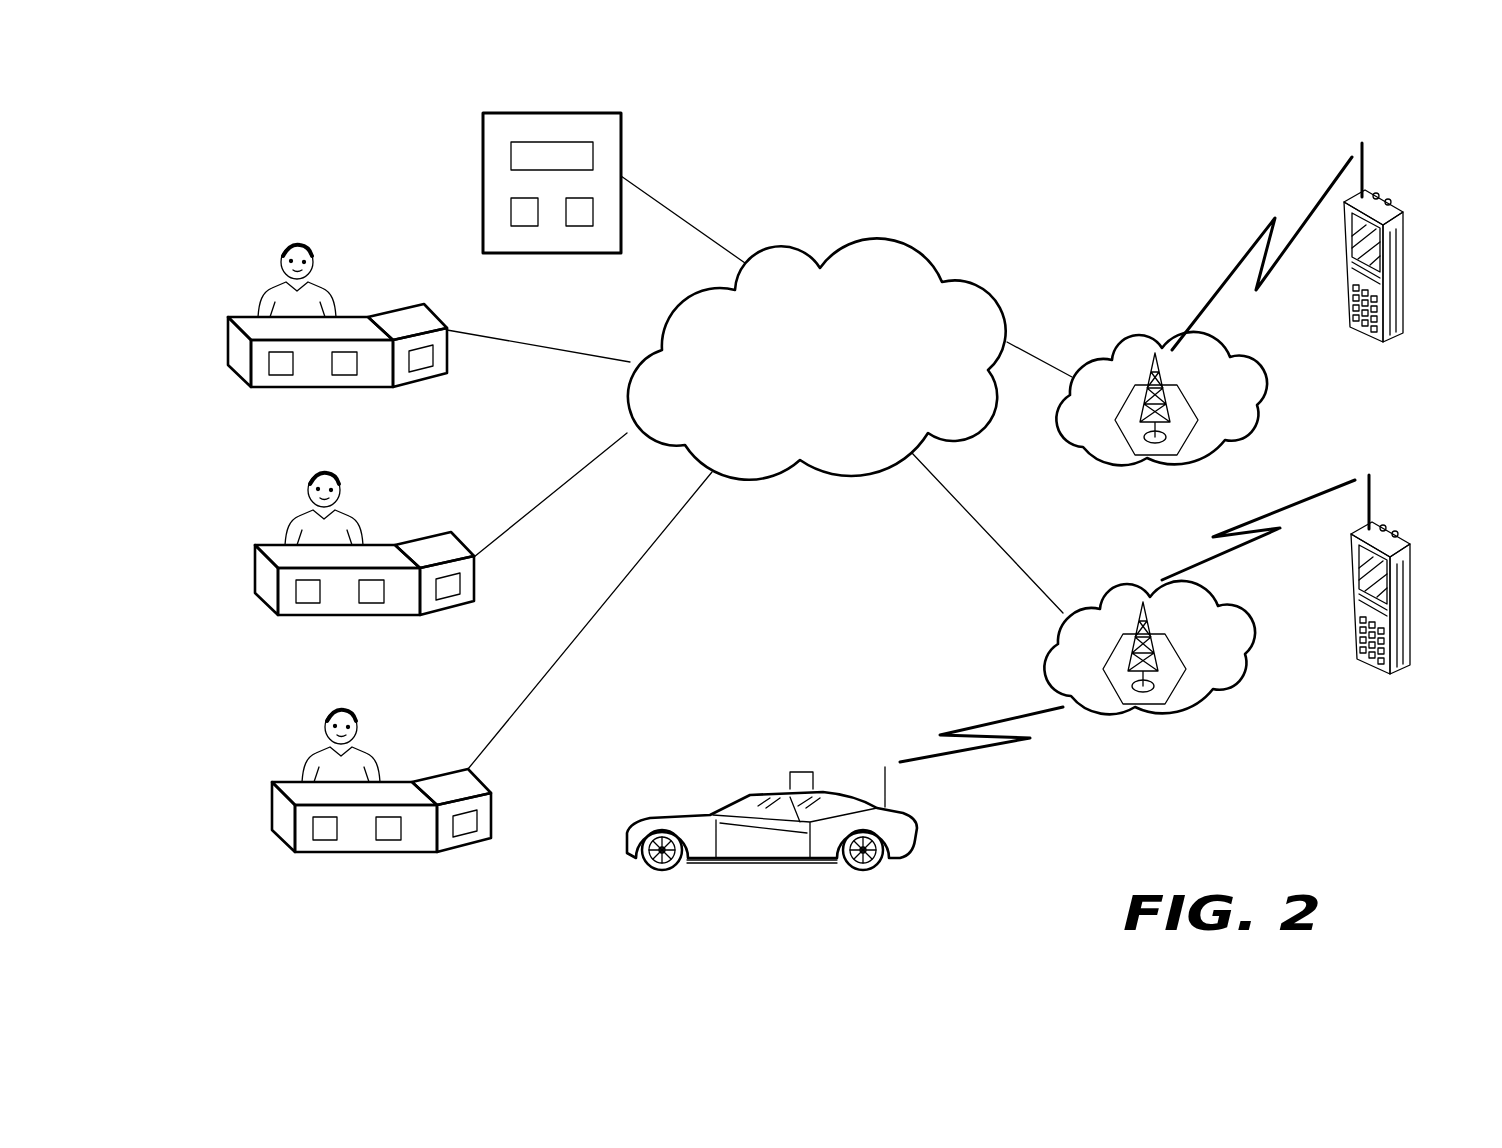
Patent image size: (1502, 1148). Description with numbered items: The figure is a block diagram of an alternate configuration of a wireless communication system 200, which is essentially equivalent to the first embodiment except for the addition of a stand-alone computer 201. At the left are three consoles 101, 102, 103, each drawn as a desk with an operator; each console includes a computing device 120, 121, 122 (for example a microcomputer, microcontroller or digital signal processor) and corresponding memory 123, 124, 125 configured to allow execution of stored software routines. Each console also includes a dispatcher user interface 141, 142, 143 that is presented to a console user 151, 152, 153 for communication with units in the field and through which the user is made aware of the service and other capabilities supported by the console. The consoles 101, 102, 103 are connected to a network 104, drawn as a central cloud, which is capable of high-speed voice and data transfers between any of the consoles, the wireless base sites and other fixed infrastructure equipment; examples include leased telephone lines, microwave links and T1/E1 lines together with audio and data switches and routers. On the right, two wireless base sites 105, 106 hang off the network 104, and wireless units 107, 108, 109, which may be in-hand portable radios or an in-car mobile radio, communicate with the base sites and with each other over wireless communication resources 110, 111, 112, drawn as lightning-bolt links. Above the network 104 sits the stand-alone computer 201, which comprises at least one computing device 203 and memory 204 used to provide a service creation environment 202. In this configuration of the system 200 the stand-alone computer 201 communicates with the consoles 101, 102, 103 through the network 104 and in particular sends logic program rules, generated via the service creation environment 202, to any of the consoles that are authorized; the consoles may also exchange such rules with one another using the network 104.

The console 101 is at (242, 387).
The console 102 is at (344, 598).
The console 103 is at (361, 835).
The network 104 is at (903, 243).
The wireless base site 105 is at (1137, 330).
The wireless base site 106 is at (1120, 580).
The wireless unit 107 is at (1350, 310).
The wireless unit 108 is at (1410, 655).
The wireless unit 109 is at (908, 832).
The wireless communication resource 110 is at (1263, 230).
The wireless communication resource 111 is at (1230, 525).
The wireless communication resource 112 is at (983, 723).
The computing device 120 is at (268, 360).
The computing device 121 is at (248, 581).
The computing device 122 is at (265, 818).
The memory 123 is at (334, 372).
The memory 124 is at (354, 625).
The memory 125 is at (371, 862).
The dispatcher user interface 141 is at (430, 357).
The dispatcher user interface 142 is at (483, 605).
The dispatcher user interface 143 is at (500, 842).
The console user 151 is at (275, 288).
The console user 152 is at (295, 509).
The console user 153 is at (312, 746).
The wireless communication system 200 is at (1285, 857).
The stand-alone computer 201 is at (623, 126).
The service creation environment 202 is at (510, 153).
The computing device 203 is at (510, 213).
The memory 204 is at (593, 215).